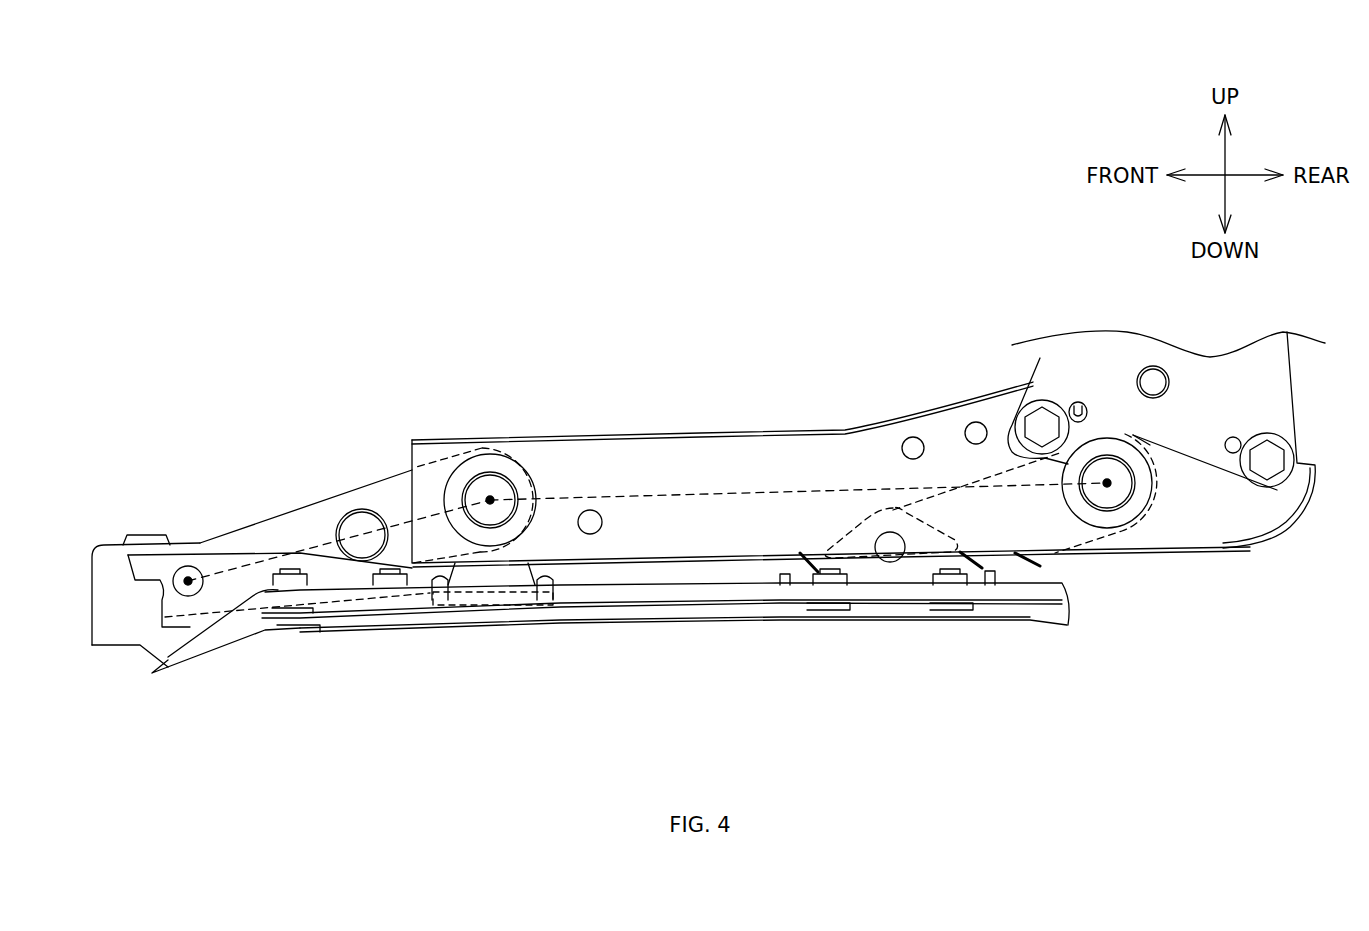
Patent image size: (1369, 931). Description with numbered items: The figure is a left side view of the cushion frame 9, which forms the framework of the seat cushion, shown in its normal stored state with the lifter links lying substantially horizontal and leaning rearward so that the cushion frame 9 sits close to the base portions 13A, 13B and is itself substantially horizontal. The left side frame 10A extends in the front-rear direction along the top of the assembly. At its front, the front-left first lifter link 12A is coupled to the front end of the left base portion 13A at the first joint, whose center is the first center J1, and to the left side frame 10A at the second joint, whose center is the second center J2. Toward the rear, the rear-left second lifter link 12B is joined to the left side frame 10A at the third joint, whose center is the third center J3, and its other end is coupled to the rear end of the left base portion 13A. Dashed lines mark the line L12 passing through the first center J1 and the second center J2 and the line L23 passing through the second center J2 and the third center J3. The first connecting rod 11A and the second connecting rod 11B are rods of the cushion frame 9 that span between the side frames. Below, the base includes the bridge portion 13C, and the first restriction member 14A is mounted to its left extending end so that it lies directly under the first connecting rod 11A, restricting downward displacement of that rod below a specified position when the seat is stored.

The cushion frame 9 is at (745, 380).
The left side frame 10A is at (845, 430).
The first connecting rod 11A is at (518, 500).
The second connecting rod 11B is at (1135, 495).
The front-left first lifter link 12A is at (310, 505).
The rear-left second lifter link 12B is at (1130, 560).
The left base portion 13A is at (730, 605).
The right base portion 13B is at (627, 625).
The bridge portion 13C is at (567, 587).
The first restriction member 14A is at (480, 578).
The first center J1 is at (188, 577).
The second center J2 is at (492, 495).
The third center J3 is at (1107, 479).
The line connecting J1 and J2 L12 is at (396, 525).
The line connecting J2 and J3 L23 is at (662, 495).